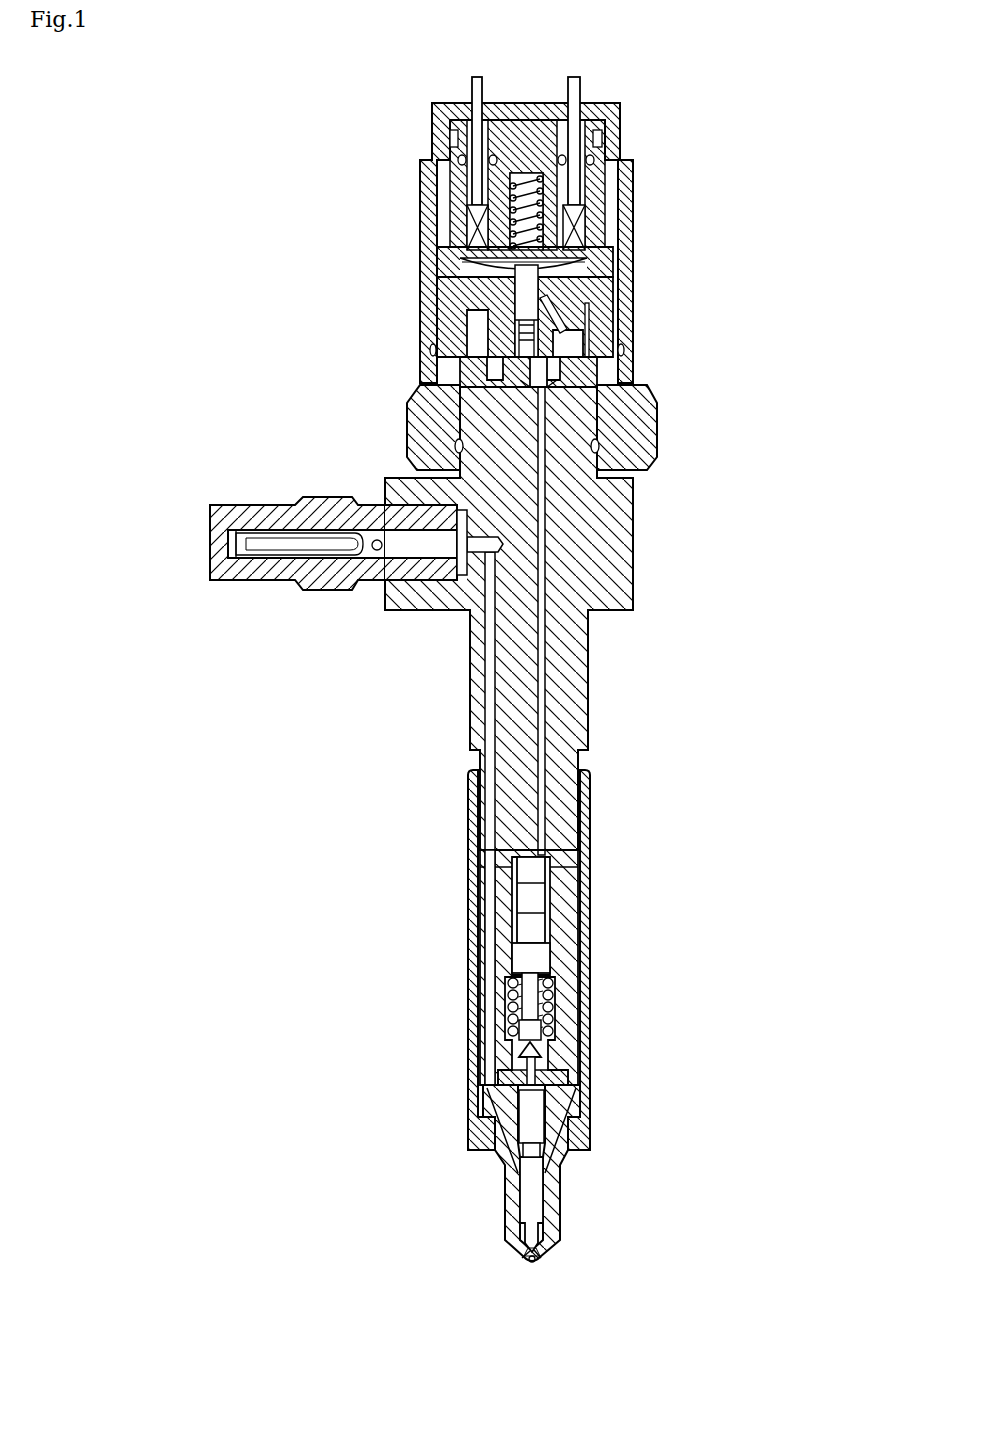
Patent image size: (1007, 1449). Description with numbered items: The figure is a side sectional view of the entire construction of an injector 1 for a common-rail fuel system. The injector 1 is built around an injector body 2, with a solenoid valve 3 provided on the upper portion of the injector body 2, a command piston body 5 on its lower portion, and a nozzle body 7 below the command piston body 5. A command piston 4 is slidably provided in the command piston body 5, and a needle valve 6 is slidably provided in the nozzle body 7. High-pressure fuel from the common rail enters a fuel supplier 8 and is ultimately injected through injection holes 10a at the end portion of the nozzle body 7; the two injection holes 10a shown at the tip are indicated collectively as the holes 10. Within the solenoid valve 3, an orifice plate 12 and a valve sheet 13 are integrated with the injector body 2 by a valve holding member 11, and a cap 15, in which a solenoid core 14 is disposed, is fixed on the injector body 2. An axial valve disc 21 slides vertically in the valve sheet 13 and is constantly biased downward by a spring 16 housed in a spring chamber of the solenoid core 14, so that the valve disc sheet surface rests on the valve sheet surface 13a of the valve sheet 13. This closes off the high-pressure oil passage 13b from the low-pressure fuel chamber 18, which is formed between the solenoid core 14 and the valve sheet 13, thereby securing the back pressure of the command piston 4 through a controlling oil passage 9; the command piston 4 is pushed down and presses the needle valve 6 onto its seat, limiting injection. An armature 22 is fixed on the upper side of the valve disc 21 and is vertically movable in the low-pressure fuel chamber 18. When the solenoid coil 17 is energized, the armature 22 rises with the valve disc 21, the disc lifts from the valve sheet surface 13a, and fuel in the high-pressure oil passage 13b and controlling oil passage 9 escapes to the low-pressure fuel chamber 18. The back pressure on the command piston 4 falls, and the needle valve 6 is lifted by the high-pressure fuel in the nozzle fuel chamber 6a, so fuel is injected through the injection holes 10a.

The injector 1 is at (465, 693).
The injector body 2 is at (633, 573).
The solenoid valve 3 is at (686, 114).
The command piston 4 is at (538, 898).
The command piston body 5 is at (568, 960).
The needle valve 6 is at (532, 1210).
The nozzle fuel chamber 6a is at (540, 1153).
The nozzle body 7 is at (512, 1183).
The fuel supplier 8 is at (482, 668).
The controlling oil passage 9 is at (545, 680).
The injection holes 10 is at (627, 1264).
The injection holes 10a is at (538, 1252).
The valve holding member 11 is at (648, 437).
The orifice plate 12 is at (573, 383).
The valve sheet 13 is at (577, 350).
The valve sheet surface 13a is at (567, 307).
The high-pressure oil passage 13b is at (558, 320).
The solenoid core 14 is at (593, 198).
The cap 15 is at (633, 172).
The spring 16 is at (505, 193).
The solenoid coil 17 is at (582, 227).
The low-pressure fuel chamber 18 is at (587, 276).
The valve disc 21 is at (520, 297).
The armature 22 is at (463, 262).